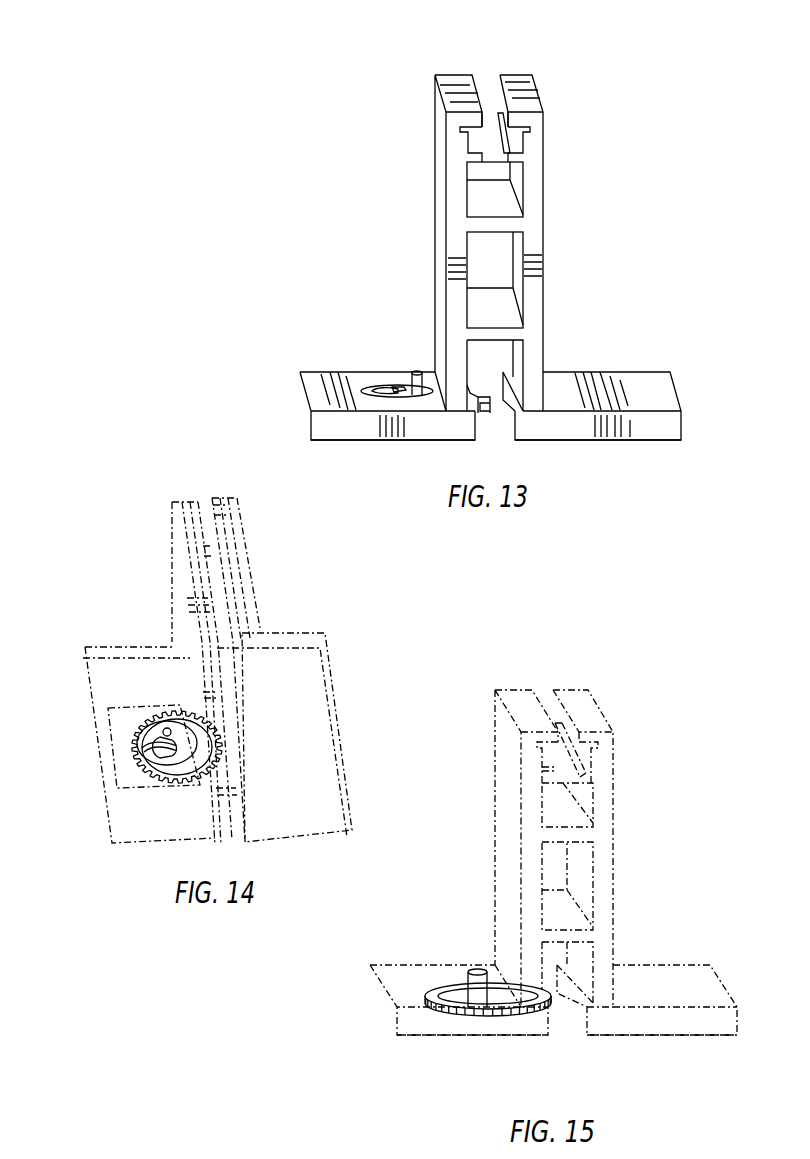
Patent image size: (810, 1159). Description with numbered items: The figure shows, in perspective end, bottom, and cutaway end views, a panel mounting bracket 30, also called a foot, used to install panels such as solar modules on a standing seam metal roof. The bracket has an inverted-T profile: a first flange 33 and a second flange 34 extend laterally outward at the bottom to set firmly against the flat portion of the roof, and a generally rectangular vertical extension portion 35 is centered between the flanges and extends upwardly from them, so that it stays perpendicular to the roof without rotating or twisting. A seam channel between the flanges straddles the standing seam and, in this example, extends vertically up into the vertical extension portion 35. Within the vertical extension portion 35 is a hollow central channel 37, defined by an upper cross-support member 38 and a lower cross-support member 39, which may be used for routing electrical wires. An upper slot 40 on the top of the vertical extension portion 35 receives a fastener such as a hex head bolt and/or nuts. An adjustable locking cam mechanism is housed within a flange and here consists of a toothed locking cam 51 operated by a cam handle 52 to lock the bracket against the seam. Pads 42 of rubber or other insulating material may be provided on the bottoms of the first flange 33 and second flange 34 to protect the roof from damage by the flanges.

In FIG. 13, the panel mounting bracket 30 is at (250, 200).
In FIG. 14, the panel mounting bracket 30 is at (98, 552).
In FIG. 15, the panel mounting bracket 30 is at (660, 667).
In FIG. 13, the first flange 33 is at (605, 372).
In FIG. 15, the first flange 33 is at (662, 975).
In FIG. 13, the second flange 34 is at (303, 412).
In FIG. 15, the second flange 34 is at (397, 973).
In FIG. 13, the vertical extension portion 35 is at (537, 177).
In FIG. 14, the vertical extension portion 35 is at (247, 565).
In FIG. 15, the vertical extension portion 35 is at (607, 780).
In FIG. 13, the central channel 37 is at (500, 268).
In FIG. 13, the upper cross-support member 38 is at (483, 215).
In FIG. 13, the lower cross-support member 39 is at (480, 325).
In FIG. 13, the upper slot 40 is at (490, 70).
In FIG. 13, the pad 42 is at (368, 440).
In FIG. 14, the pad 42 is at (318, 707).
In FIG. 15, the pad 42 is at (410, 1037).
In FIG. 14, the toothed locking cam 51 is at (133, 744).
In FIG. 15, the toothed locking cam 51 is at (558, 1007).
In FIG. 13, the cam handle 52 is at (415, 372).
In FIG. 15, the cam handle 52 is at (470, 977).